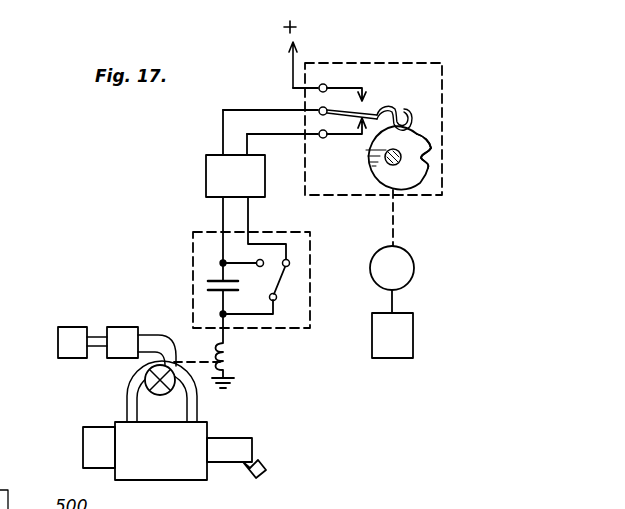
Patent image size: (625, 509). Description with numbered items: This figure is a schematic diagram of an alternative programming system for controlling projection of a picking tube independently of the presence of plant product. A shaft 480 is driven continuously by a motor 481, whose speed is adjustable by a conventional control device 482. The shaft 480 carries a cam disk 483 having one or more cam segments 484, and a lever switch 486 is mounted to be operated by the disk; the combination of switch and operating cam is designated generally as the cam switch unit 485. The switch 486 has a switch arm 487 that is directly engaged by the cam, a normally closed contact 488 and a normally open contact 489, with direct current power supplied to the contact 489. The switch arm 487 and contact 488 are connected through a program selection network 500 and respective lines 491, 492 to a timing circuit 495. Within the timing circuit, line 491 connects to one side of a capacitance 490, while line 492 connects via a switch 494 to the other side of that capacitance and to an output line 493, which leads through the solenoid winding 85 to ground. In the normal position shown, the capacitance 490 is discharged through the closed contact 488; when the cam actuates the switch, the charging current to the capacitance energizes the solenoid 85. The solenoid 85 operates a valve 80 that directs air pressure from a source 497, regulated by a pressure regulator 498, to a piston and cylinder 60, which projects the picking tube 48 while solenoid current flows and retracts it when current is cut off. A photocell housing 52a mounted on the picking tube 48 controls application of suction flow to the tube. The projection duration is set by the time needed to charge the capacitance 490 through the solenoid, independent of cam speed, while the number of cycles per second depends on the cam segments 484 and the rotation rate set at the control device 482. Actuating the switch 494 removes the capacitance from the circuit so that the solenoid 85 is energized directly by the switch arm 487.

The switch and operating cam combination 485 is at (390, 65).
The lever switch 486 is at (396, 90).
The switch arm 487 is at (412, 112).
The normally closed contact 488 is at (360, 126).
The normally open contact 489 is at (363, 90).
The cam disk 483 is at (414, 166).
The cam segment 484 is at (430, 149).
The shaft 480 is at (393, 166).
The motor 481 is at (414, 268).
The control device 482 is at (413, 346).
The program selection network 500 is at (206, 170).
The line 491 is at (223, 208).
The line 492 is at (248, 208).
The timing circuit 495 is at (182, 248).
The capacitance 490 is at (206, 278).
The switch 494 is at (298, 280).
The output line 493 is at (228, 346).
The solenoid winding 85 is at (236, 380).
The source 497 is at (82, 312).
The pressure regulator 498 is at (140, 312).
The valve 80 is at (145, 378).
The piston and cylinder 60 is at (105, 416).
The picking tube 48 is at (240, 438).
The photocell housing 52a is at (264, 472).